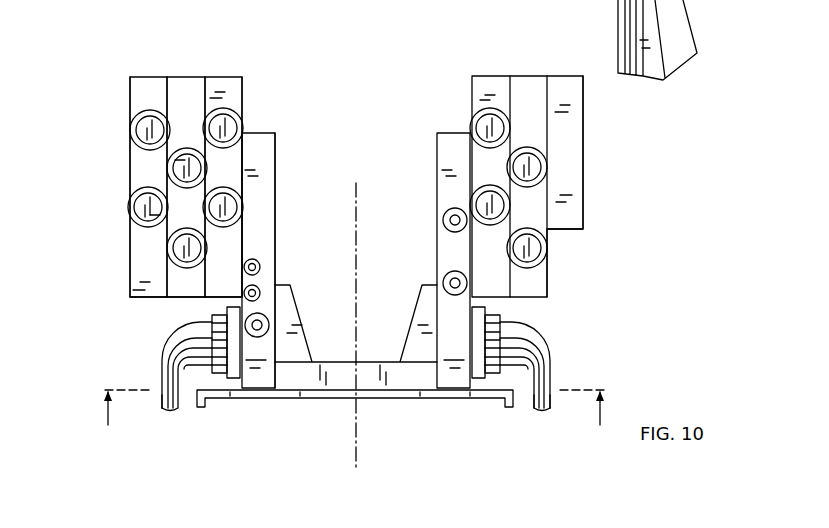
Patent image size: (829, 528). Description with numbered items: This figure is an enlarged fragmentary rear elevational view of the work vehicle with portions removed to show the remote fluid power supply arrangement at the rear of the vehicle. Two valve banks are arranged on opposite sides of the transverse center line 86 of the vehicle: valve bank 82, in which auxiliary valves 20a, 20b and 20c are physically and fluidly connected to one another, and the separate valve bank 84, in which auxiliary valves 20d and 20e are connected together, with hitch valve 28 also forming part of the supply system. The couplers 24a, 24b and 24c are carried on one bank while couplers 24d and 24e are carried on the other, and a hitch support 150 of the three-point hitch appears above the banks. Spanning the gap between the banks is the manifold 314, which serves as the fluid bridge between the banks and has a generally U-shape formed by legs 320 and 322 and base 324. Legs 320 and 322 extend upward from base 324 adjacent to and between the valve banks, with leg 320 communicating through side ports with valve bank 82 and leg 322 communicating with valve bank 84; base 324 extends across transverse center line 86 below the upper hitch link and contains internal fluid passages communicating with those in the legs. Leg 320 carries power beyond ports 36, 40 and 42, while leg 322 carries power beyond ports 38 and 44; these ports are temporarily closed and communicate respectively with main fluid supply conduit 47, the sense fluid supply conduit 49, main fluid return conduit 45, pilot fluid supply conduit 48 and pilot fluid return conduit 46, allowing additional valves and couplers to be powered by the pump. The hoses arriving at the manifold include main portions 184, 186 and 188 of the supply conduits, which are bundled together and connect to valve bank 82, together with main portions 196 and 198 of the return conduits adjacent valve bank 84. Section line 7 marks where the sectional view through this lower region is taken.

The section line 7 is at (355, 395).
The auxiliary valve 20a is at (148, 75).
The auxiliary valve 20b is at (186, 75).
The auxiliary valve 20c is at (223, 75).
The auxiliary valve 20d is at (485, 75).
The auxiliary valve 20e is at (530, 75).
The coupler 24a is at (130, 128).
The coupler 24b is at (168, 172).
The coupler 24c is at (226, 110).
The coupler 24d is at (487, 108).
The coupler 24e is at (545, 256).
The hitch valve 28 is at (565, 232).
The power beyond port 36 is at (262, 318).
The power beyond port 38 is at (443, 283).
The power beyond port 40 is at (258, 288).
The power beyond port 42 is at (256, 260).
The power beyond port 44 is at (443, 220).
The main fluid return conduit 45 is at (545, 328).
The pilot fluid return conduit 46 is at (528, 403).
The main fluid supply conduit 47 is at (183, 317).
The pilot fluid supply conduit 48 is at (160, 398).
The sense fluid supply conduit 49 is at (160, 357).
The valve bank 82 is at (128, 74).
The valve bank 84 is at (586, 155).
The transverse center line 86 is at (356, 272).
The hitch support 150 is at (703, 17).
The main portion 184 is at (172, 332).
The main portion 186 is at (183, 392).
The main portion 188 is at (163, 365).
The main portion 196 is at (547, 358).
The main portion 198 is at (549, 393).
The manifold 314 is at (280, 150).
The leg 320 is at (262, 133).
The leg 322 is at (437, 133).
The base 324 is at (312, 360).